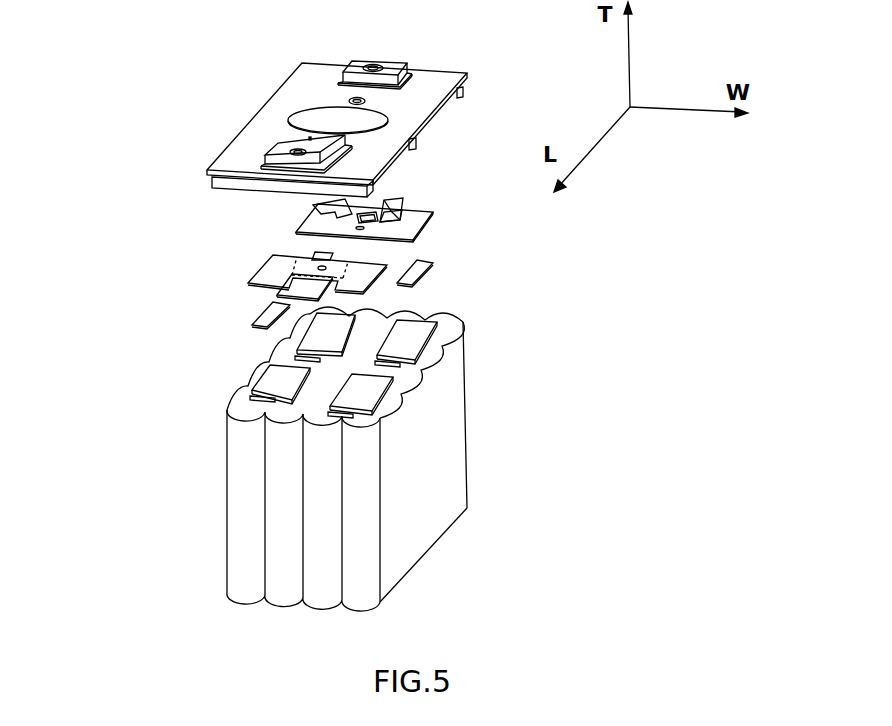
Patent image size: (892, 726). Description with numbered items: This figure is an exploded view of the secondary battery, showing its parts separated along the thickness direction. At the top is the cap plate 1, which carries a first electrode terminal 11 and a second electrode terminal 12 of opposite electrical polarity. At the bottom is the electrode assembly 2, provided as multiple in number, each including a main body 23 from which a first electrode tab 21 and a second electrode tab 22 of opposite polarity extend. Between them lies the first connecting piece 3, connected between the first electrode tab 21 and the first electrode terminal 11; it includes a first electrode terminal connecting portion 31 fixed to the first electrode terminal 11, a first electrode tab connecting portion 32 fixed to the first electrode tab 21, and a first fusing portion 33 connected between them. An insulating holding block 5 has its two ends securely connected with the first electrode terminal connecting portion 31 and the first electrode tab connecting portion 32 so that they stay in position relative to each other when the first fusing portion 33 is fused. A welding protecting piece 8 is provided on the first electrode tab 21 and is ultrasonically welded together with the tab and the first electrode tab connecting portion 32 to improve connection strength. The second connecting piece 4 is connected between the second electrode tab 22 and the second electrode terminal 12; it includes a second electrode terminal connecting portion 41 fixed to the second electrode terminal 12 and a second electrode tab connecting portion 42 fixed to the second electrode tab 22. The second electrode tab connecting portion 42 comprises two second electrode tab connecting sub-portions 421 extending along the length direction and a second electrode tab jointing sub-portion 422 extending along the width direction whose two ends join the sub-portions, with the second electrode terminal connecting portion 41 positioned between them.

The cap plate 1 is at (253, 132).
The first electrode terminal 11 is at (375, 67).
The second electrode terminal 12 is at (295, 153).
The electrode assembly 2 is at (325, 459).
The first electrode tab 21 is at (313, 337).
The second electrode tab 22 is at (267, 384).
The main body 23 is at (457, 485).
The first connecting piece 3 is at (393, 204).
The first electrode terminal connecting portion 31 is at (390, 203).
The first electrode tab connecting portion 32 is at (407, 220).
The first fusing portion 33 is at (397, 218).
The second connecting piece 4 is at (261, 265).
The second electrode terminal connecting portion 41 is at (297, 290).
The second electrode tab connecting portion 42 is at (274, 258).
The second electrode tab connecting sub-portion 421 is at (272, 278).
The second electrode tab jointing sub-portion 422 is at (314, 268).
The insulating holding block 5 is at (353, 216).
The welding protecting piece 8 is at (415, 275).